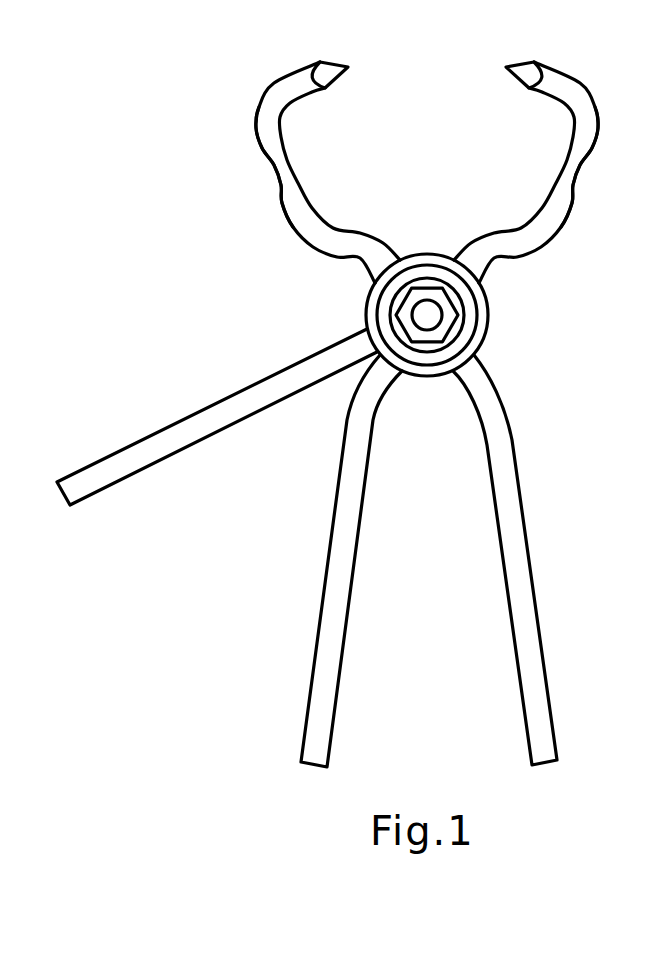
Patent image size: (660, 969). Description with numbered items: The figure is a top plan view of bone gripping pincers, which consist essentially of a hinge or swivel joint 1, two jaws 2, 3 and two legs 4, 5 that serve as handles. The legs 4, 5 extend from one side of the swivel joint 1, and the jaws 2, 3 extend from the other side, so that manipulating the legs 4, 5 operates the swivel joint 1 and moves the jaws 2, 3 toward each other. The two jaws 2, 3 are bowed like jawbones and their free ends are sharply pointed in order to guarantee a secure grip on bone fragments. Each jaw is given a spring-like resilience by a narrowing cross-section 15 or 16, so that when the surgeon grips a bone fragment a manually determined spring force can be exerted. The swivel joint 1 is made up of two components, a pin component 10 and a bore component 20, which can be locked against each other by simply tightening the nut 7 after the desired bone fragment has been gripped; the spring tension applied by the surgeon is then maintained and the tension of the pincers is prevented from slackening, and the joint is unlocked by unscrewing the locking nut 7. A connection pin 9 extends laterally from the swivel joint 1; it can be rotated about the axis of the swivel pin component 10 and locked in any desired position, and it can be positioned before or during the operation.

The swivel joint 1 is at (350, 304).
The jaw 2 is at (287, 92).
The jaw 3 is at (570, 90).
The leg 4 is at (333, 603).
The leg 5 is at (527, 623).
The nut 7 is at (443, 328).
The connection pin 9 is at (206, 420).
The pin component 10 is at (427, 316).
The narrowing cross-section 15 is at (287, 182).
The narrowing cross-section 16 is at (568, 178).
The bore component 20 is at (478, 324).